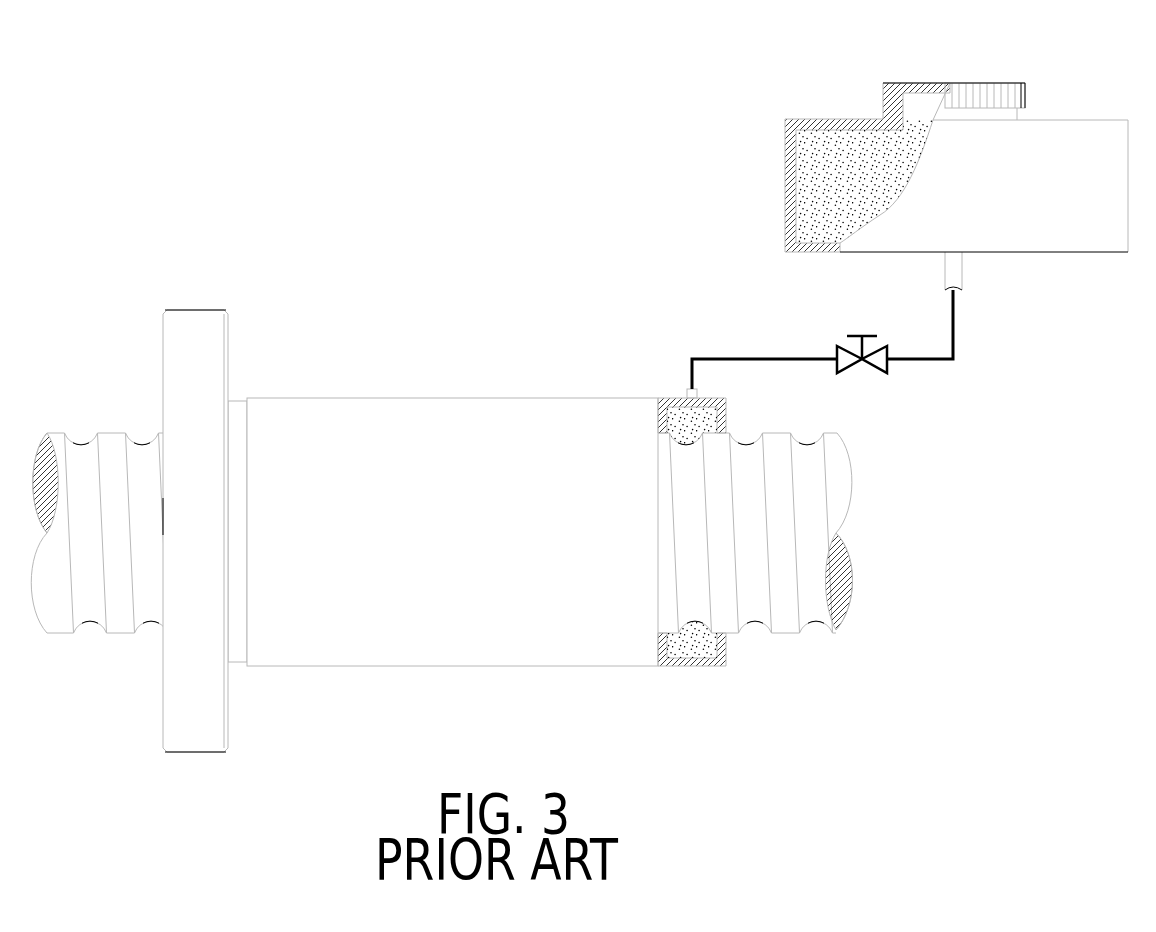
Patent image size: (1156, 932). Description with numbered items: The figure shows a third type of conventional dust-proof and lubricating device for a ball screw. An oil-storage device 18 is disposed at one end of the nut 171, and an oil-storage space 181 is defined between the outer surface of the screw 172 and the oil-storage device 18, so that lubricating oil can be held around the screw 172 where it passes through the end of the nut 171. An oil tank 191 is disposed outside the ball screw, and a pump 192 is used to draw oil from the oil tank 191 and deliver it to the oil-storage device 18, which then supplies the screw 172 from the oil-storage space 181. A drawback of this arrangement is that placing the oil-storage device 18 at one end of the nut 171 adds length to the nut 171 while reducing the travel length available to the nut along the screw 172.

The nut 171 is at (504, 372).
The screw 172 is at (791, 659).
The oil-storage device 18 is at (708, 695).
The oil-storage space 181 is at (685, 642).
The oil tank 191 is at (853, 167).
The pump 192 is at (875, 370).